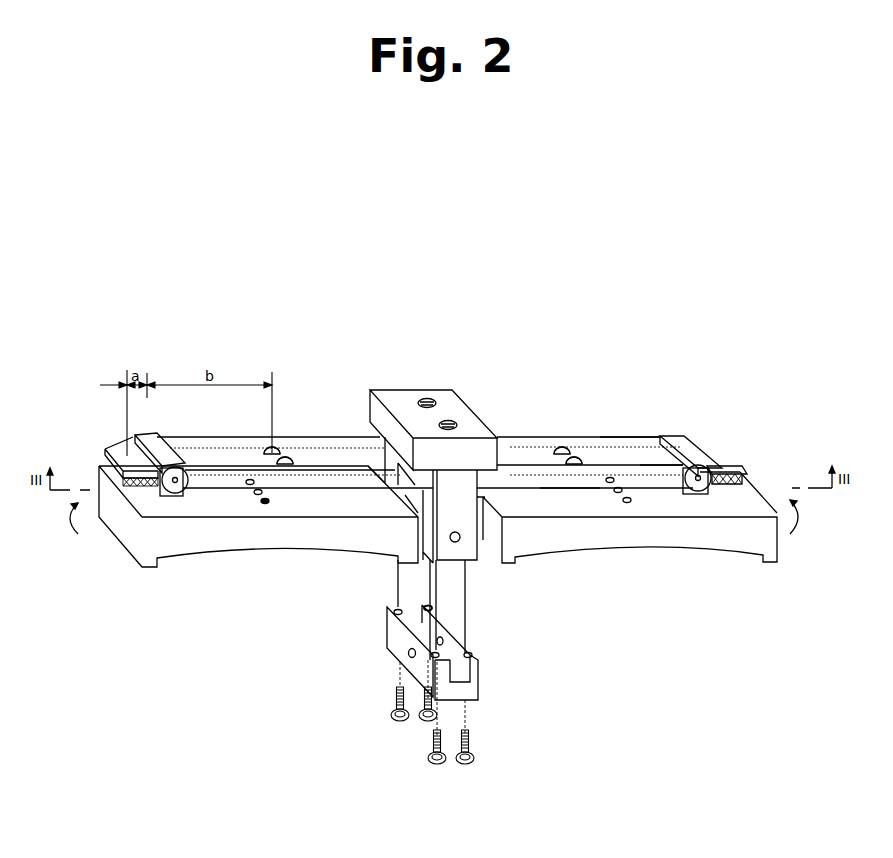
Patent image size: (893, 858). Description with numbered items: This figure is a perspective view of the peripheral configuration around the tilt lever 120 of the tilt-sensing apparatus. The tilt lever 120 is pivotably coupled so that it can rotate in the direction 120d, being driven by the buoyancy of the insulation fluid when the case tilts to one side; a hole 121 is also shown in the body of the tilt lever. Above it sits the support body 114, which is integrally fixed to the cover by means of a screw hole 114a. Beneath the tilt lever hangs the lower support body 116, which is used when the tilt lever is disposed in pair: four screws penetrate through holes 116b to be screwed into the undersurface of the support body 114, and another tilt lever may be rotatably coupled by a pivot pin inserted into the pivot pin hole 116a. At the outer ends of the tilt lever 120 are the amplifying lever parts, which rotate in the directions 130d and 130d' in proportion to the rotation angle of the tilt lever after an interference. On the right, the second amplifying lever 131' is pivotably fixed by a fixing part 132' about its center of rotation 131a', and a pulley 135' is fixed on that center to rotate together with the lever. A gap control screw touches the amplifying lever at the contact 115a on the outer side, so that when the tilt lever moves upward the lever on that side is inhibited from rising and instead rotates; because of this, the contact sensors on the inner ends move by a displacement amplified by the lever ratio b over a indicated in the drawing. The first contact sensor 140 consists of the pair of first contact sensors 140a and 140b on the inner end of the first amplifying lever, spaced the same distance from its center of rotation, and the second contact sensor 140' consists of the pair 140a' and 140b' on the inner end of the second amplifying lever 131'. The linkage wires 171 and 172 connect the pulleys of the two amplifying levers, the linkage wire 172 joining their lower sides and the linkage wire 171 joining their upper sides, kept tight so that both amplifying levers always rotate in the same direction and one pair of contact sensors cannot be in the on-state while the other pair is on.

The support body 114 is at (390, 397).
The screw hole 114a is at (448, 421).
The contact of gap control screw 115a is at (127, 457).
The lower support body 116 is at (480, 678).
The pivot pin hole 116a is at (410, 656).
The holes 116b is at (432, 608).
The tilt lever 120 is at (223, 558).
The rotation direction of tilt lever 120d is at (434, 517).
The base block hole 121 is at (266, 502).
The rotation direction of first amplifying lever part 130d is at (295, 466).
The rotation direction of second amplifying lever part 130d' is at (585, 462).
The second amplifying lever 131' is at (681, 431).
The center of rotation of second amplifying lever 131a' is at (757, 464).
The fixing part 132' is at (719, 444).
The pulley 135' is at (725, 537).
The first contact sensor 140 is at (317, 431).
The first contact sensor 140a is at (297, 425).
The first contact sensor 140b is at (304, 441).
The second contact sensor 140' is at (533, 431).
The second contact sensor 140a' is at (548, 425).
The second contact sensor 140b' is at (554, 441).
The linkage wire 171 is at (573, 485).
The linkage wire 172 is at (615, 428).